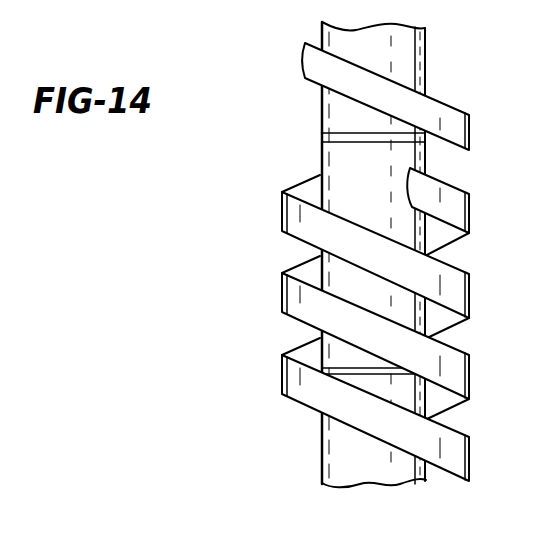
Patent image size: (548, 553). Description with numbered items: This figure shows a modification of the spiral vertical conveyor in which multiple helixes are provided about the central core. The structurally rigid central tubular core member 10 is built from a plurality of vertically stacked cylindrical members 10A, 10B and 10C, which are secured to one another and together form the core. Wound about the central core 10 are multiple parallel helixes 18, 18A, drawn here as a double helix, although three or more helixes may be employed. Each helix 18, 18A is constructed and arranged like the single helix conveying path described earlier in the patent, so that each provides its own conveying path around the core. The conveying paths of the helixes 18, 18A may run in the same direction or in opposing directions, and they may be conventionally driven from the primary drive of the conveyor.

The central tubular core member 10 is at (331, 254).
The cylindrical member 10A is at (378, 469).
The cylindrical member 10B is at (376, 191).
The cylindrical member 10C is at (402, 58).
The helix 18 is at (288, 299).
The helix 18A is at (288, 383).